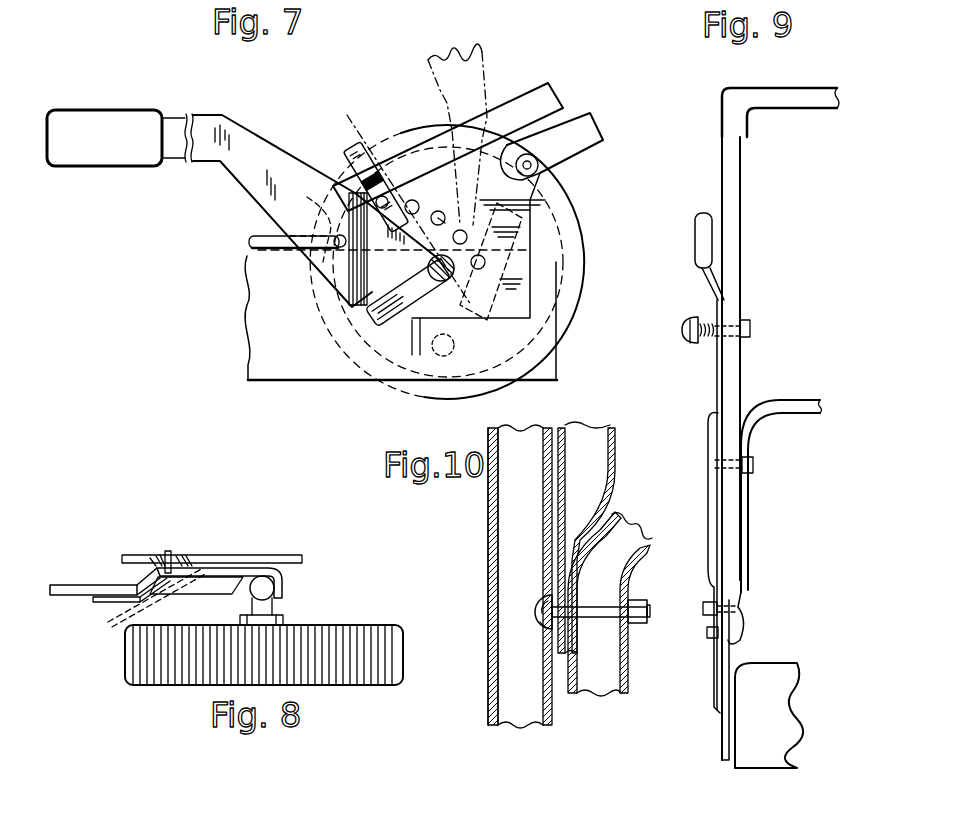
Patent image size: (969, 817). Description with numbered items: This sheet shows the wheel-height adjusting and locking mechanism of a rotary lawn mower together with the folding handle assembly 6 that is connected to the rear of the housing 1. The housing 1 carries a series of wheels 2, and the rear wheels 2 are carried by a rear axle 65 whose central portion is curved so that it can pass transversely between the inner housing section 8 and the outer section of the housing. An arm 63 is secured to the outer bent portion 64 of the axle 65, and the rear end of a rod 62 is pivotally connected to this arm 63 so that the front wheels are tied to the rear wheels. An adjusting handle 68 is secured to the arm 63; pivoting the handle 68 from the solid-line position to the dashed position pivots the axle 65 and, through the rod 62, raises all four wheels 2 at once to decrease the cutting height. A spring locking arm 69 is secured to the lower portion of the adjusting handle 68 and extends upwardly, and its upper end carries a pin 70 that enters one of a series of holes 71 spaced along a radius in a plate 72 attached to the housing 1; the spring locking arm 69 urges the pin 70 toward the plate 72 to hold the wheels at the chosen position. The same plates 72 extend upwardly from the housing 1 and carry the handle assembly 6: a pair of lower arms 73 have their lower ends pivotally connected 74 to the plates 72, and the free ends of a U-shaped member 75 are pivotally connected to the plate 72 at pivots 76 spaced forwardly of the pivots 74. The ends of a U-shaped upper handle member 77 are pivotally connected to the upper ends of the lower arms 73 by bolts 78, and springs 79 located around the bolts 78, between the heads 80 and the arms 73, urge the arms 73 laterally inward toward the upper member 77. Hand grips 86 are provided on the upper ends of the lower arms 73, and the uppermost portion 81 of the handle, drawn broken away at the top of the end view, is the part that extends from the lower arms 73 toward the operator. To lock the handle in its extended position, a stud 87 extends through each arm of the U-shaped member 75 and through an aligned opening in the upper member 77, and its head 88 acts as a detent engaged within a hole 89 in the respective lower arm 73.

In FIG. 9, the housing 1 is at (777, 657).
In FIG. 7, the wheels 2 is at (583, 265).
In FIG. 10, the handle assembly 6 is at (487, 538).
In FIG. 9, the handle assembly 6 is at (747, 222).
In FIG. 7, the inner housing section 8 is at (347, 113).
In FIG. 7, the rod 62 is at (259, 236).
In FIG. 7, the arm 63 is at (325, 277).
In FIG. 8, the arm 63 is at (235, 568).
In FIG. 7, the outer bent portion 64 is at (418, 340).
In FIG. 8, the outer bent portion 64 is at (270, 587).
In FIG. 7, the rear axle 65 is at (372, 318).
In FIG. 8, the rear axle 65 is at (282, 605).
In FIG. 7, the adjusting handle 68 is at (277, 147).
In FIG. 8, the adjusting handle 68 is at (80, 583).
In FIG. 7, the spring locking arm 69 is at (372, 153).
In FIG. 8, the spring locking arm 69 is at (102, 603).
In FIG. 7, the pin 70 is at (406, 192).
In FIG. 8, the pin 70 is at (173, 560).
In FIG. 7, the holes 71 is at (443, 214).
In FIG. 8, the holes 71 is at (168, 552).
In FIG. 7, the plate 72 is at (540, 225).
In FIG. 8, the plate 72 is at (262, 558).
In FIG. 9, the plate 72 is at (720, 675).
In FIG. 7, the lower arms 73 is at (580, 130).
In FIG. 10, the lower arms 73 is at (490, 577).
In FIG. 9, the lower arms 73 is at (708, 447).
In FIG. 7, the pivotal connection 74 is at (538, 165).
In FIG. 9, the pivotal connection 74 is at (705, 605).
In FIG. 7, the U-shaped member 75 is at (538, 95).
In FIG. 10, the U-shaped member 75 is at (628, 662).
In FIG. 9, the U-shaped member 75 is at (773, 413).
In FIG. 7, the pivots 76 is at (326, 210).
In FIG. 9, the pivots 76 is at (740, 627).
In FIG. 10, the U-shaped upper handle member 77 is at (620, 433).
In FIG. 9, the U-shaped upper handle member 77 is at (737, 280).
In FIG. 9, the bolts 78 is at (752, 328).
In FIG. 9, the springs 79 is at (700, 312).
In FIG. 9, the heads 80 is at (683, 329).
In FIG. 9, the handle bar 81 is at (819, 96).
In FIG. 9, the hand grips 86 is at (703, 213).
In FIG. 10, the stud 87 is at (598, 607).
In FIG. 9, the stud 87 is at (753, 468).
In FIG. 10, the head 88 is at (543, 598).
In FIG. 10, the hole 89 is at (538, 630).